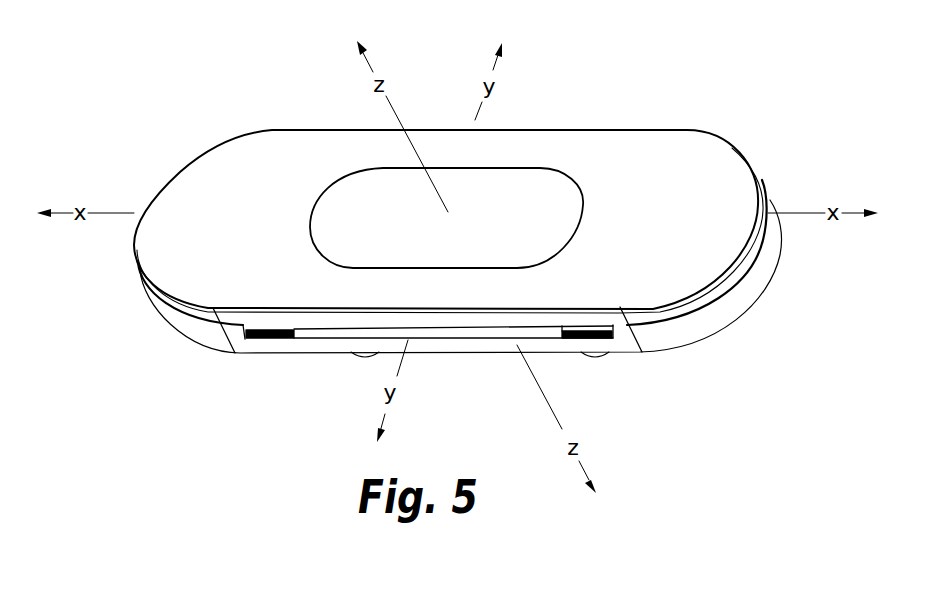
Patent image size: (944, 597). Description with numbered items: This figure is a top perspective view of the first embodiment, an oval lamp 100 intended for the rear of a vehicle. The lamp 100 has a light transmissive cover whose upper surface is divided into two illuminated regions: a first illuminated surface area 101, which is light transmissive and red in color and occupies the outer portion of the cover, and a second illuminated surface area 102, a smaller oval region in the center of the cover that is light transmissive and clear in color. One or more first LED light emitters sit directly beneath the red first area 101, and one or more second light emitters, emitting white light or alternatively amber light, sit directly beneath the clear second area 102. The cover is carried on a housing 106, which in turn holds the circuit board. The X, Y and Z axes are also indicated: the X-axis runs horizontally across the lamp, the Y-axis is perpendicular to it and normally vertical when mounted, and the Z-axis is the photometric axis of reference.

The lamp 100 is at (660, 70).
The first illuminated surface area 101 is at (681, 228).
The second illuminated surface area 102 is at (412, 239).
The housing 106 is at (535, 344).